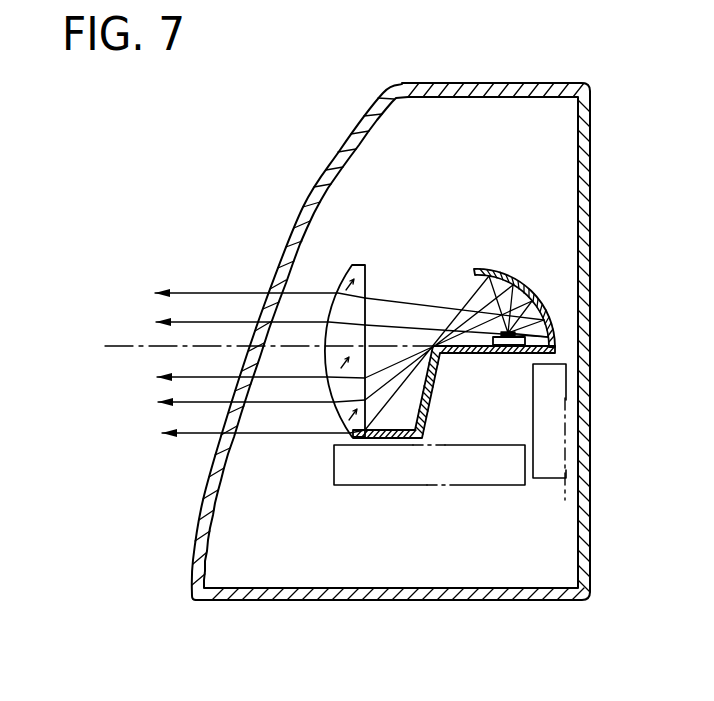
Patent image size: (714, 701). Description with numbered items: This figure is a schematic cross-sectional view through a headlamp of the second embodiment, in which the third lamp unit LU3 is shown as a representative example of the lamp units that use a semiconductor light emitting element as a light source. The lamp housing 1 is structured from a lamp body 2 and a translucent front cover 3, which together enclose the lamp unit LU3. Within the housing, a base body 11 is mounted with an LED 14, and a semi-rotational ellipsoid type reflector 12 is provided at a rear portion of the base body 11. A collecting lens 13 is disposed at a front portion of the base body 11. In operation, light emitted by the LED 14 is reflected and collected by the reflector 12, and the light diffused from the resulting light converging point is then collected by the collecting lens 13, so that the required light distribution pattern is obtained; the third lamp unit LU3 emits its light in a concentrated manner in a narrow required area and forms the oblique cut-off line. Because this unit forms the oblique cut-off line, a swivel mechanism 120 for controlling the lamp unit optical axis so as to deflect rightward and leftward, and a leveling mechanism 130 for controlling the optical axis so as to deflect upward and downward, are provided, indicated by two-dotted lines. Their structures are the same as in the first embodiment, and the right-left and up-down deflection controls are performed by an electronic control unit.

The lamp housing 1 is at (443, 82).
The lamp body 2 is at (497, 82).
The translucent front cover 3 is at (330, 177).
The third lamp unit LU3 is at (478, 245).
The base body 11 is at (433, 393).
The reflector 12 is at (530, 292).
The collecting lens 13 is at (351, 276).
The LED 14 is at (515, 353).
The swivel mechanism 120 is at (398, 473).
The leveling mechanism 130 is at (552, 468).